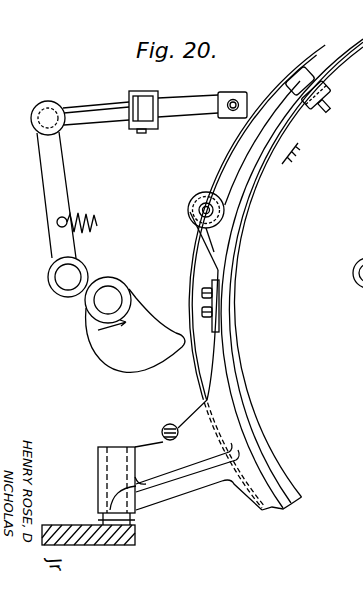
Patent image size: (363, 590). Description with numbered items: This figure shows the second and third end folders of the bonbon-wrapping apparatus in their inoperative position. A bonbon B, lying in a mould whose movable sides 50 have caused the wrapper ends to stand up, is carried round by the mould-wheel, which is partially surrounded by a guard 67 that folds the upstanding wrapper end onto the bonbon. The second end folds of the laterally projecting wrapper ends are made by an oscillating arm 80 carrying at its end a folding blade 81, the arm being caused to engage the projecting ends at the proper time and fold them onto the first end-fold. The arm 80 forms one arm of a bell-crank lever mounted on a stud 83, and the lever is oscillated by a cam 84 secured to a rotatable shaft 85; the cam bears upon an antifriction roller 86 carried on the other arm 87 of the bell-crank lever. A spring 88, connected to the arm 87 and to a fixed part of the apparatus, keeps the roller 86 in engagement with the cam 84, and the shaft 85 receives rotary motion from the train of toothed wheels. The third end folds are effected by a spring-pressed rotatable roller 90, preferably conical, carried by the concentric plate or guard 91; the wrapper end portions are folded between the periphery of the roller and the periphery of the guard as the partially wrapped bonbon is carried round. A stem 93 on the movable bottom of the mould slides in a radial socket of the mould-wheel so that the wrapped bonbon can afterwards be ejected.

The movable sides of the mould 50 is at (283, 84).
The guard 67 is at (190, 263).
The oscillating arm 80 is at (90, 108).
The folding blade 81 is at (187, 107).
The stud 83 is at (48, 116).
The cam 84 is at (135, 330).
The rotatable shaft 85 is at (104, 302).
The antifriction roller 86 is at (82, 265).
The arm of the bell-crank lever 87 is at (60, 176).
The spring 88 is at (98, 223).
The spring-pressed rotatable roller 90 is at (205, 192).
The concentric plate or guard 91 is at (237, 227).
The stem 93 is at (325, 111).
The bonbon B is at (288, 78).